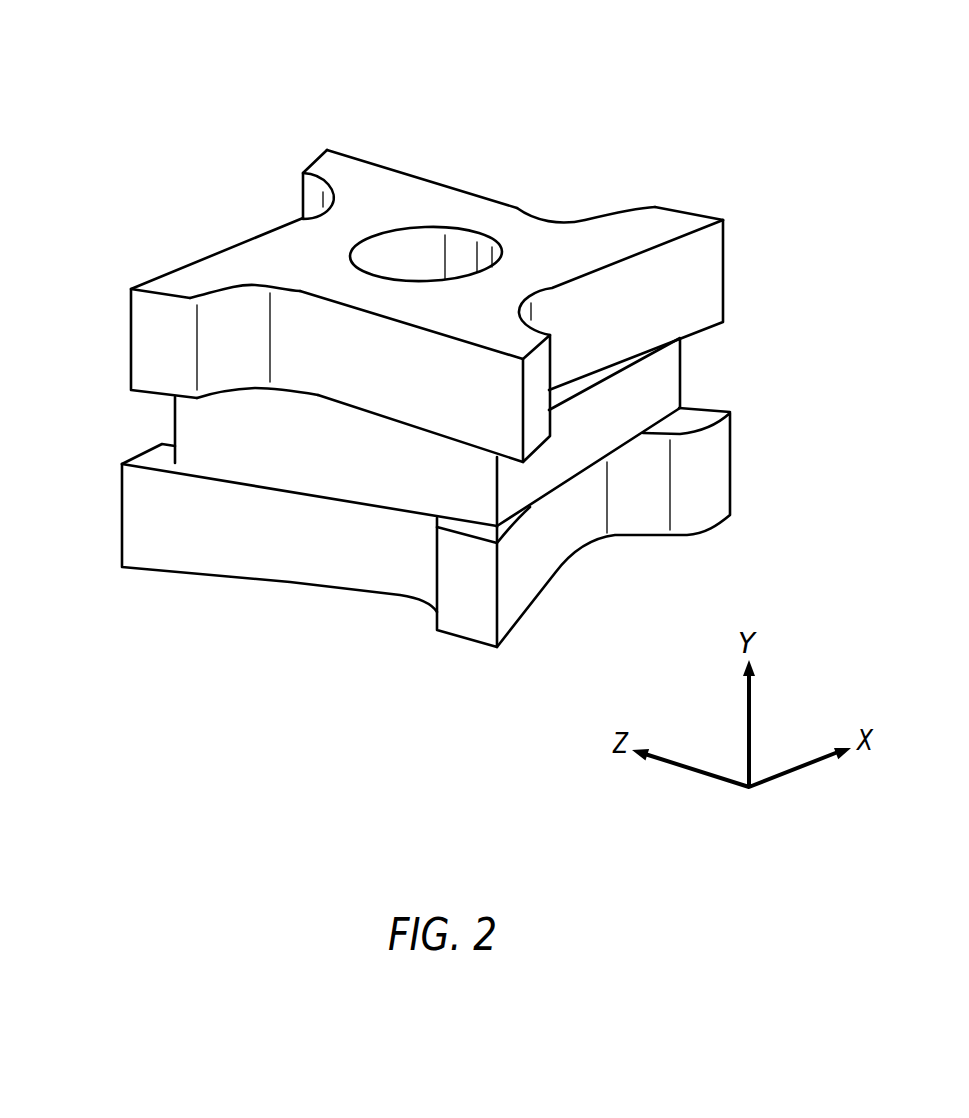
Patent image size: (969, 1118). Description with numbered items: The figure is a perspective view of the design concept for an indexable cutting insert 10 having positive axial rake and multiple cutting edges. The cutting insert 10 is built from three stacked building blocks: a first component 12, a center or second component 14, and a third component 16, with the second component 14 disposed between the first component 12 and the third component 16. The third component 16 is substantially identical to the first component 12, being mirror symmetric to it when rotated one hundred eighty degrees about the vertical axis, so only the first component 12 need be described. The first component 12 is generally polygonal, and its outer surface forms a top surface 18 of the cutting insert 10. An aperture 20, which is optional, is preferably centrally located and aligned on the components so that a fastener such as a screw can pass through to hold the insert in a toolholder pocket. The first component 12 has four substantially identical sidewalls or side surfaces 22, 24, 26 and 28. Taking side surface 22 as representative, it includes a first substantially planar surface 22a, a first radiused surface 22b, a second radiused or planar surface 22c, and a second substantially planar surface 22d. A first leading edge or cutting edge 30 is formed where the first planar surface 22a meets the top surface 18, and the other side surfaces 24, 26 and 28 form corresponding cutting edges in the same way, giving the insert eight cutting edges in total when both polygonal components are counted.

The cutting insert 10 is at (250, 77).
The first component 12 is at (720, 160).
The second component 14 is at (716, 367).
The third component 16 is at (808, 407).
The top surface 18 is at (262, 255).
The aperture 20 is at (456, 241).
The side surface 22 is at (415, 400).
The first substantially planar surface 22a is at (467, 410).
The first radiused surface 22b is at (262, 348).
The second radiused or planar surface 22c is at (237, 393).
The second substantially planar surface 22d is at (148, 358).
The side surface 24 is at (690, 280).
The side surface 26 is at (566, 191).
The side surface 28 is at (188, 242).
The first leading edge or cutting edge 30 is at (363, 303).